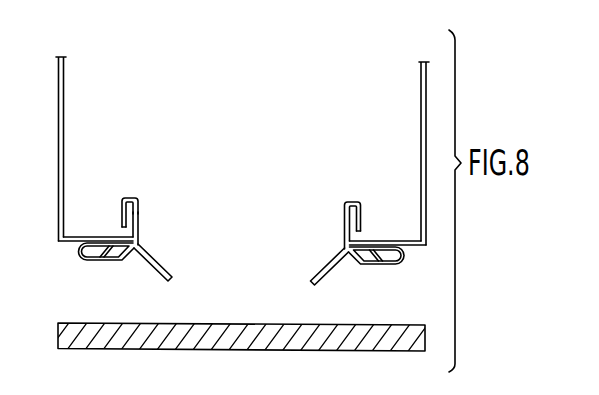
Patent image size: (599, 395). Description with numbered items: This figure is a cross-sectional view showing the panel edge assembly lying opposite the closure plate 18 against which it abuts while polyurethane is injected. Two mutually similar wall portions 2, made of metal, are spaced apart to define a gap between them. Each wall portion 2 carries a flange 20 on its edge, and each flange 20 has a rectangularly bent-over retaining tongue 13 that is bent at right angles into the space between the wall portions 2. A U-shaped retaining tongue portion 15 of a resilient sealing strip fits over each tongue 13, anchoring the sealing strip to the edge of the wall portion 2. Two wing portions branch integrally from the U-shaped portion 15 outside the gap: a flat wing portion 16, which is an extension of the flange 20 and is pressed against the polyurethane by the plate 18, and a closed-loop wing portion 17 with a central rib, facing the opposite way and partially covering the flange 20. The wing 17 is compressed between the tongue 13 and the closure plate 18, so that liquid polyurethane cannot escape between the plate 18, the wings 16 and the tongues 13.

The wall portion 2 is at (64, 87).
The retaining tongue 13 is at (138, 199).
The U-shaped retaining tongue portion 15 is at (138, 226).
The wing portion 16 is at (160, 262).
The wing portion 17 is at (84, 260).
The closure plate 18 is at (115, 339).
The flange 20 is at (79, 237).